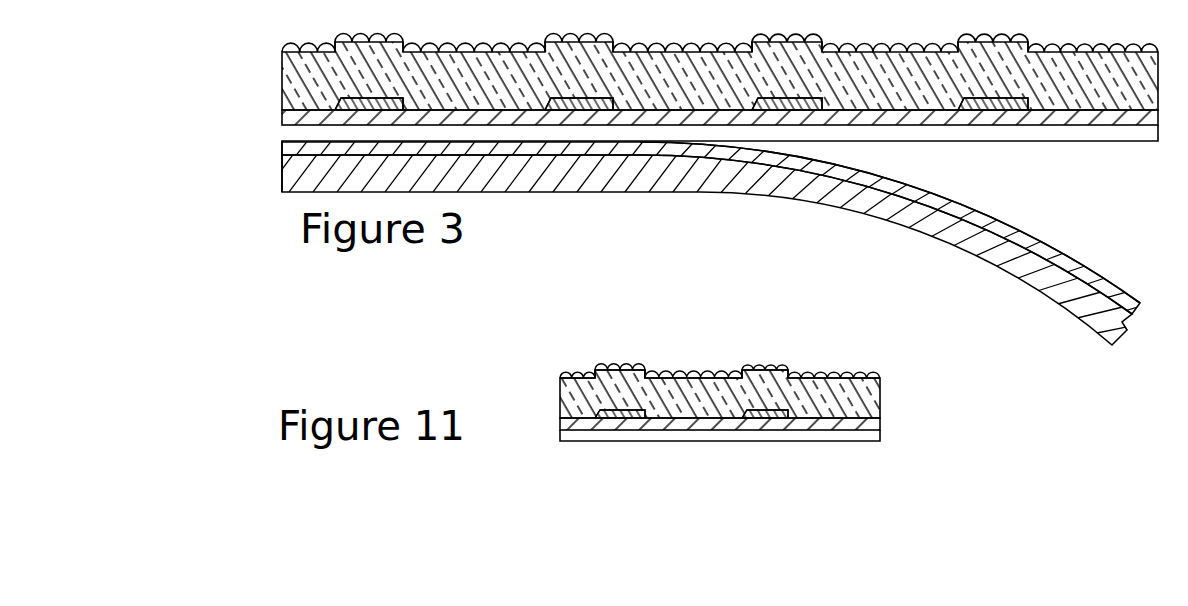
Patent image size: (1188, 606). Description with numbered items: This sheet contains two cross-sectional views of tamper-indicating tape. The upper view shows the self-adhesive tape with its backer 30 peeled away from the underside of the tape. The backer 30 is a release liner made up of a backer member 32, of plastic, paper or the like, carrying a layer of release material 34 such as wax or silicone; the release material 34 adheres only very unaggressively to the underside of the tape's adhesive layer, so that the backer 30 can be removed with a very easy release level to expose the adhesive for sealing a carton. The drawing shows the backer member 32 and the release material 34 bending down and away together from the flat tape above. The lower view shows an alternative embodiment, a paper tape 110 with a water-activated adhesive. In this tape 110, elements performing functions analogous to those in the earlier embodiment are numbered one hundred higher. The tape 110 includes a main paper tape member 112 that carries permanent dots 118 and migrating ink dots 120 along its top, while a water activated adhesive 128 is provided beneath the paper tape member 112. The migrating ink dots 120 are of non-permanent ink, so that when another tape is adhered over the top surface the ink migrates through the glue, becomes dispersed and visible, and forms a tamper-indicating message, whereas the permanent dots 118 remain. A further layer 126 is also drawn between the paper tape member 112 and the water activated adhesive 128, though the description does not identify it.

In FIG. 3, the backer 30 is at (946, 194).
In FIG. 3, the backer member 32 is at (1050, 292).
In FIG. 3, the layer of release material 34 is at (1018, 241).
In FIG. 11, the tape 110 is at (711, 384).
In FIG. 11, the main paper tape member 112 is at (564, 384).
In FIG. 11, the permanent dots 118 is at (860, 376).
In FIG. 11, the migrating ink dots 120 is at (822, 372).
In FIG. 11, the adhesive layer 126 is at (879, 424).
In FIG. 11, the water activated adhesive 128 is at (564, 432).